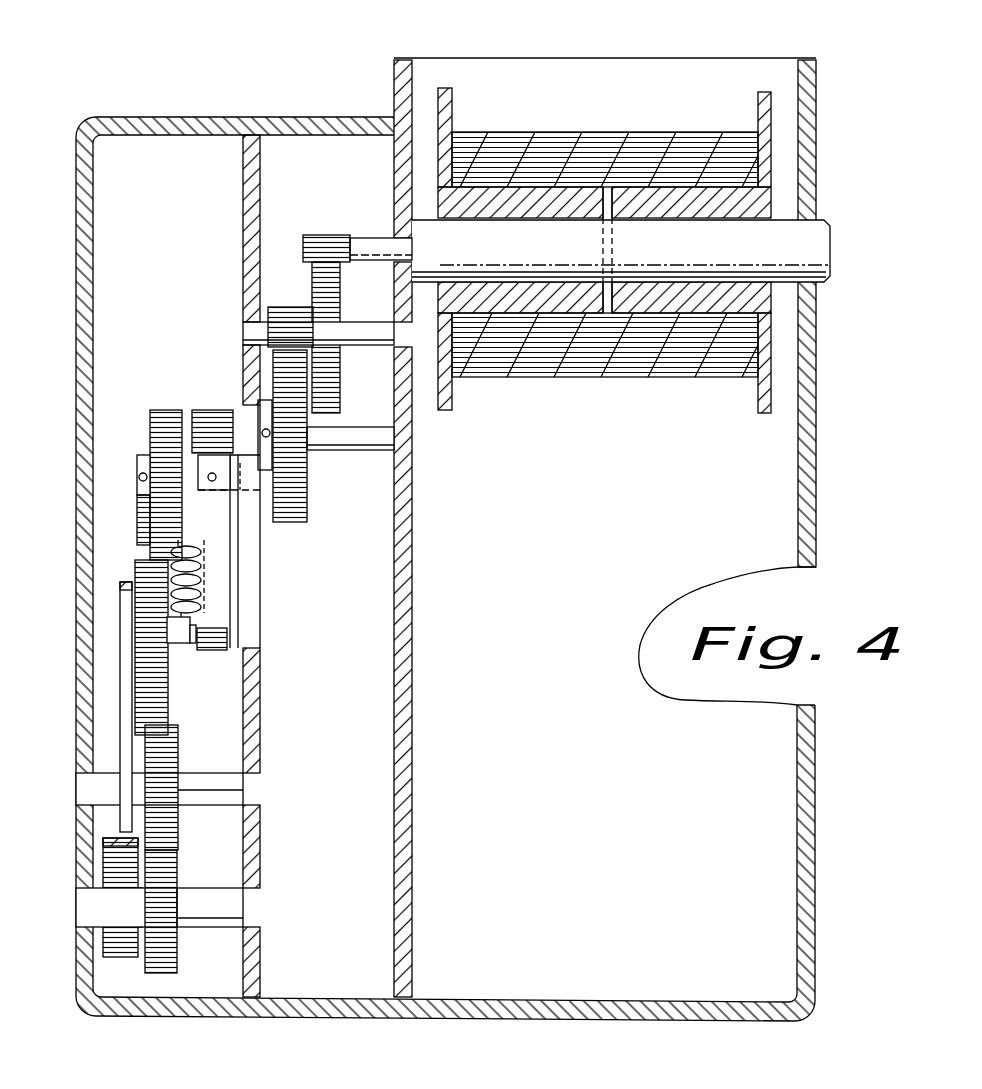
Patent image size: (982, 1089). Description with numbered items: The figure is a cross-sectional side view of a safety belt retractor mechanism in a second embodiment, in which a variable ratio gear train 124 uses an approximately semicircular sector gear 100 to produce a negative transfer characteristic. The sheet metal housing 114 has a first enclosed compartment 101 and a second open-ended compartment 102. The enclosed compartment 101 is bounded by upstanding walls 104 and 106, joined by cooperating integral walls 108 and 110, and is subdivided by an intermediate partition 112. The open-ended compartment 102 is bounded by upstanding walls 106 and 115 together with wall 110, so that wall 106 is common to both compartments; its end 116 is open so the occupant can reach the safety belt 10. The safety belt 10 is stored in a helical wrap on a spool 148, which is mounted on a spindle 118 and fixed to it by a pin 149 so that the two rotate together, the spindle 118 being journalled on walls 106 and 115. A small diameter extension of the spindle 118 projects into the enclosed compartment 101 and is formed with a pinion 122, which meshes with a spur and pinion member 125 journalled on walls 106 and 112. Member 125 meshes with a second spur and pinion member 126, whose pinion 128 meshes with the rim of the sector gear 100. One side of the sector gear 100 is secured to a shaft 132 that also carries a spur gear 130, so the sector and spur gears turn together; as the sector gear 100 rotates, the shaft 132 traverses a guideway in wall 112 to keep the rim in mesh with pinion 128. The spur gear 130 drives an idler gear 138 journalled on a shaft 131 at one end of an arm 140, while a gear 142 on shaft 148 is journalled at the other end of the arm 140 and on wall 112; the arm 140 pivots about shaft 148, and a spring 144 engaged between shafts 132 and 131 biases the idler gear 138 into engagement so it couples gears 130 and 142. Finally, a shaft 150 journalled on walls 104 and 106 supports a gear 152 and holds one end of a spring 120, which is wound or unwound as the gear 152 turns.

The safety belt 10 is at (677, 137).
The sector gear 100 is at (218, 605).
The first enclosed compartment 101 is at (198, 156).
The second open-ended compartment 102 is at (764, 488).
The upstanding wall 104 is at (76, 430).
The upstanding wall 106 is at (415, 565).
The integral wall 108 is at (118, 117).
The integral wall 110 is at (355, 1008).
The partition 112 is at (257, 725).
The housing 114 is at (368, 70).
The upstanding wall 115 is at (813, 518).
The end of compartment 116 is at (632, 70).
The spindle 118 is at (815, 250).
The spring 120 is at (383, 250).
The pinion 122 is at (330, 235).
The gear train 124 is at (173, 320).
The spur and pinion member 125 is at (300, 296).
The spur and pinion member 126 is at (308, 530).
The pinion 128 is at (205, 410).
The spur gear 130 is at (160, 415).
The shaft 131 is at (182, 643).
The shaft 132 is at (247, 480).
The idler gear 138 is at (160, 670).
The arm 140 is at (120, 690).
The gear 142 is at (177, 742).
The spring 144 is at (150, 550).
The spool 148 is at (765, 105).
The pin 149 is at (607, 293).
The shaft 150 is at (227, 902).
The gear 152 is at (177, 950).